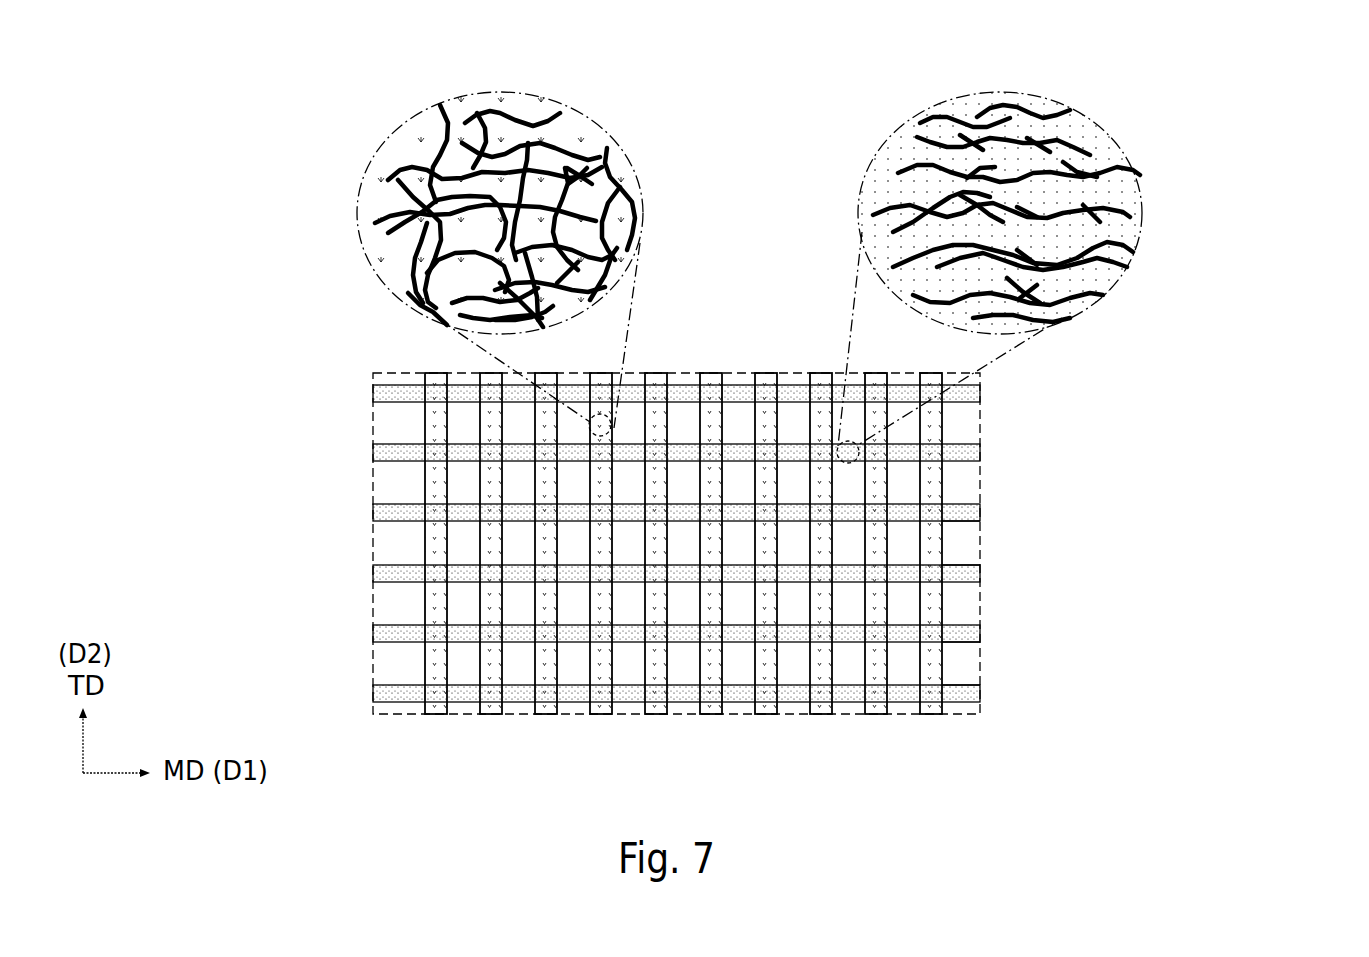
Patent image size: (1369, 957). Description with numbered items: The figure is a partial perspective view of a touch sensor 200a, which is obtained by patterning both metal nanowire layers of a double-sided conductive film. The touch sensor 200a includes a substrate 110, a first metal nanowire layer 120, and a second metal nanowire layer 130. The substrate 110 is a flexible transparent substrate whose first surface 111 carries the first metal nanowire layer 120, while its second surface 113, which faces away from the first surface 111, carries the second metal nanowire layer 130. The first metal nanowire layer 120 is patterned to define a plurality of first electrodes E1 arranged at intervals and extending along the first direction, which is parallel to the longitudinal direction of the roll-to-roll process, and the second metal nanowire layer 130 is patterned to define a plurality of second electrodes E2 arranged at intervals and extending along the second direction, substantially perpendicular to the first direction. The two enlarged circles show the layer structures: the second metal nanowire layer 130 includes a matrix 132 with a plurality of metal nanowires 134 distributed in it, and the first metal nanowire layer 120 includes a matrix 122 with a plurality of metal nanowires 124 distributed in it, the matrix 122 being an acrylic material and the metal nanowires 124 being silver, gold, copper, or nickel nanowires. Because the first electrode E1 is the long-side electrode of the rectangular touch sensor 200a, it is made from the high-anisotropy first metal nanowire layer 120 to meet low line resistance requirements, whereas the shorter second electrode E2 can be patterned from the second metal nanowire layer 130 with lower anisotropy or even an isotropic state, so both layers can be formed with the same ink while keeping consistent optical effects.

The touch sensor 200a is at (237, 66).
The substrate 110 is at (978, 600).
The first surface 111 is at (964, 542).
The second surface 113 is at (966, 663).
The first electrode E1 is at (970, 452).
The second electrode E2 is at (945, 482).
The first metal nanowire layer 120 is at (1222, 102).
The matrix 122 is at (1130, 200).
The metal nanowires 124 is at (1100, 152).
The second metal nanowire layer 130 is at (717, 102).
The matrix 132 is at (633, 197).
The metal nanowires 134 is at (616, 157).